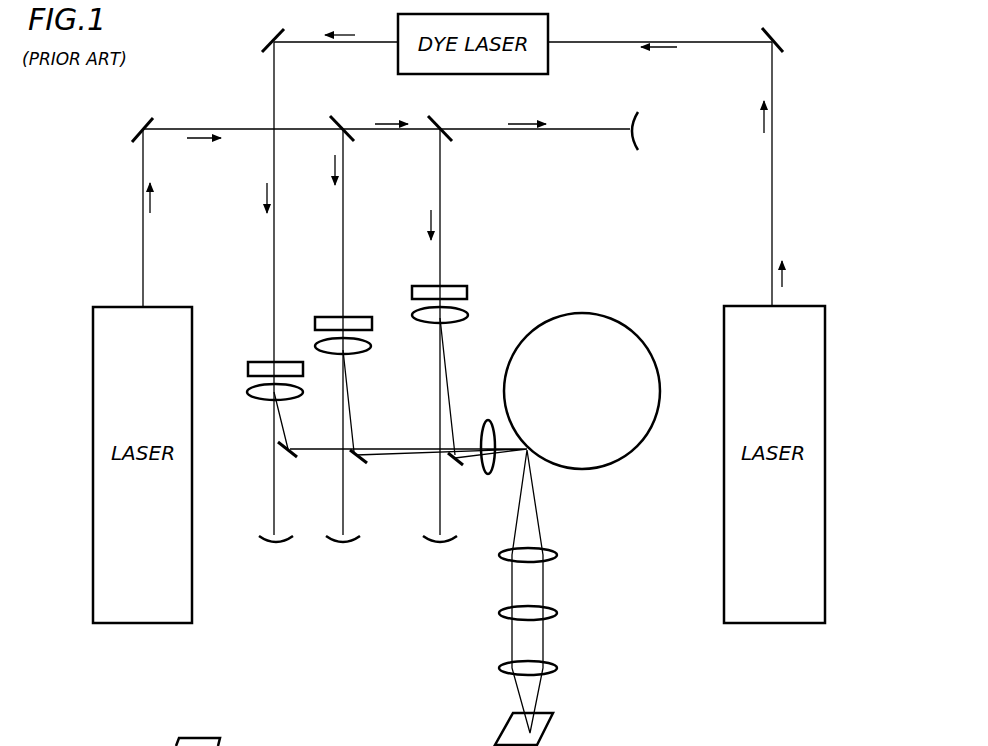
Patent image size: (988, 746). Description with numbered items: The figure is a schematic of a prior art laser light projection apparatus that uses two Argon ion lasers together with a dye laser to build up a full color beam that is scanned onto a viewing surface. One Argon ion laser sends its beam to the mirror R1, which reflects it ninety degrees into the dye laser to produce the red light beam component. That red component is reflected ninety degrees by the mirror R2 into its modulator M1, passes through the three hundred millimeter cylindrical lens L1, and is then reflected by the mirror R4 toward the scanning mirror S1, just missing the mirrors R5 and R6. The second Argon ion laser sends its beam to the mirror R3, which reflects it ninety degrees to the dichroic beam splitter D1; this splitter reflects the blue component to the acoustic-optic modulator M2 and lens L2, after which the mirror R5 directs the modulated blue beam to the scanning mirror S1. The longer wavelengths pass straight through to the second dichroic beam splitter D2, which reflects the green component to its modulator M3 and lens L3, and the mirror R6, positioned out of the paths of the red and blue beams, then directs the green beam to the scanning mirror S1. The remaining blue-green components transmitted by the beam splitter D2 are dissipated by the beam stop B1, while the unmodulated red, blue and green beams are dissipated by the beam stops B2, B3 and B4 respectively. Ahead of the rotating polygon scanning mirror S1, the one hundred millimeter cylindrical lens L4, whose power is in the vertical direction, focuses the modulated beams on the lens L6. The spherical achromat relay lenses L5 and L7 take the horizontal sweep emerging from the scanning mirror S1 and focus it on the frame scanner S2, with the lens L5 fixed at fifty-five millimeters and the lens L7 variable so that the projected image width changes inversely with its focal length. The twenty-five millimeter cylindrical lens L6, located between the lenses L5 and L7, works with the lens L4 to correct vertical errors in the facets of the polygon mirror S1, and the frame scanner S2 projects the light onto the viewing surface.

The mirror R1 is at (772, 32).
The mirror R2 is at (266, 50).
The mirror R3 is at (136, 140).
The mirror R4 is at (292, 461).
The mirror R5 is at (365, 463).
The mirror R6 is at (460, 464).
The dichroic beam splitter D1 is at (340, 120).
The dichroic beam splitter D2 is at (439, 120).
The beam stop B1 is at (640, 118).
The beam stop B2 is at (288, 544).
The beam stop B3 is at (357, 544).
The beam stop B4 is at (453, 544).
The modulator M1 is at (262, 362).
The acoustic-optic modulator M2 is at (365, 316).
The acoustic-optic modulator M3 is at (467, 292).
The cylindrical lens L1 is at (263, 400).
The cylindrical lens L2 is at (368, 350).
The cylindrical lens L3 is at (462, 318).
The cylindrical lens L4 is at (494, 474).
The spherical achromat relay lens L5 is at (557, 555).
The cylindrical lens L6 is at (557, 613).
The spherical achromat relay lens L7 is at (557, 668).
The scanning mirror S1 is at (638, 450).
The frame scanner S2 is at (553, 718).